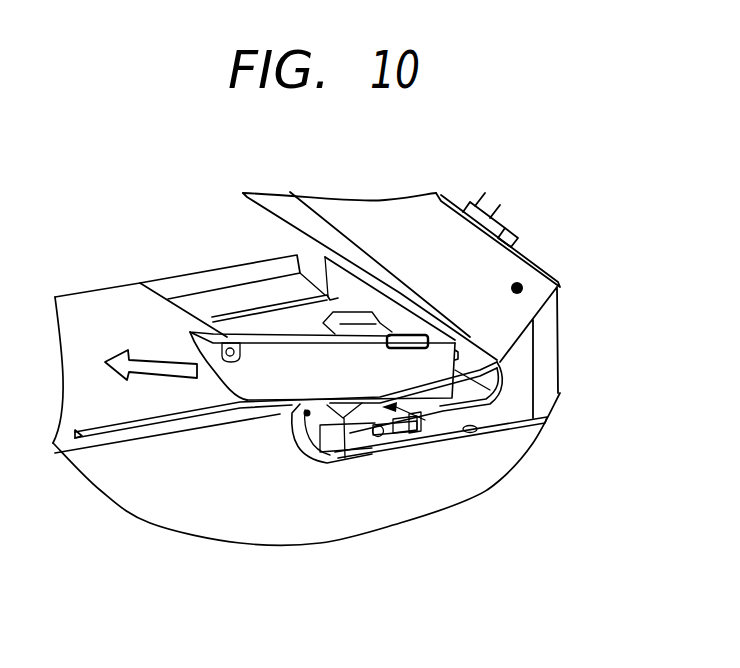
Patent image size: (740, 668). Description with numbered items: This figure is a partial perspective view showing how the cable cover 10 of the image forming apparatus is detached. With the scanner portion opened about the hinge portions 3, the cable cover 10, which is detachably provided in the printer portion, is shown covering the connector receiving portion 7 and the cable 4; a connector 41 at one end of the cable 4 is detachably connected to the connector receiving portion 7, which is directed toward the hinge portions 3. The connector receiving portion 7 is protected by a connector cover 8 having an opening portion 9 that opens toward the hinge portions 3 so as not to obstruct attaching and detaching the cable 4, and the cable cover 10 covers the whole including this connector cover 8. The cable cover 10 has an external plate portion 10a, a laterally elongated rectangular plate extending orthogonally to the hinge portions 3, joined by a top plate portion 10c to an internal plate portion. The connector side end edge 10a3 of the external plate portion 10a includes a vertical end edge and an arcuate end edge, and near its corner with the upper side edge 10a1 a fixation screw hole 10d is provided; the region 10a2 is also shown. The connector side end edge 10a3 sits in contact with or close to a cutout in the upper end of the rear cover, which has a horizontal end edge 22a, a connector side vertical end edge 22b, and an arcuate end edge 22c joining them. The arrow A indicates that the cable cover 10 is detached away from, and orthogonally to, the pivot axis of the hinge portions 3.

The hinge portion 3 is at (519, 283).
The cable 4 is at (483, 408).
The connector receiving portion 7 is at (383, 430).
The connector cover 8 is at (361, 453).
The opening portion 9 is at (414, 417).
The cable cover 10 is at (304, 338).
The external plate portion 10a is at (266, 376).
The upper side edge 10a1 is at (337, 458).
The projection 10a2 is at (357, 334).
The connector side end edge 10a3 is at (215, 383).
The top plate portion 10c is at (275, 341).
The fixation screw hole 10d is at (230, 342).
The horizontal end edge 22a is at (476, 433).
The connector side vertical end edge 22b is at (304, 466).
The arcuate end edge 22c is at (318, 452).
The connector 41 is at (403, 430).
The arrow indicating detaching direction A is at (141, 352).